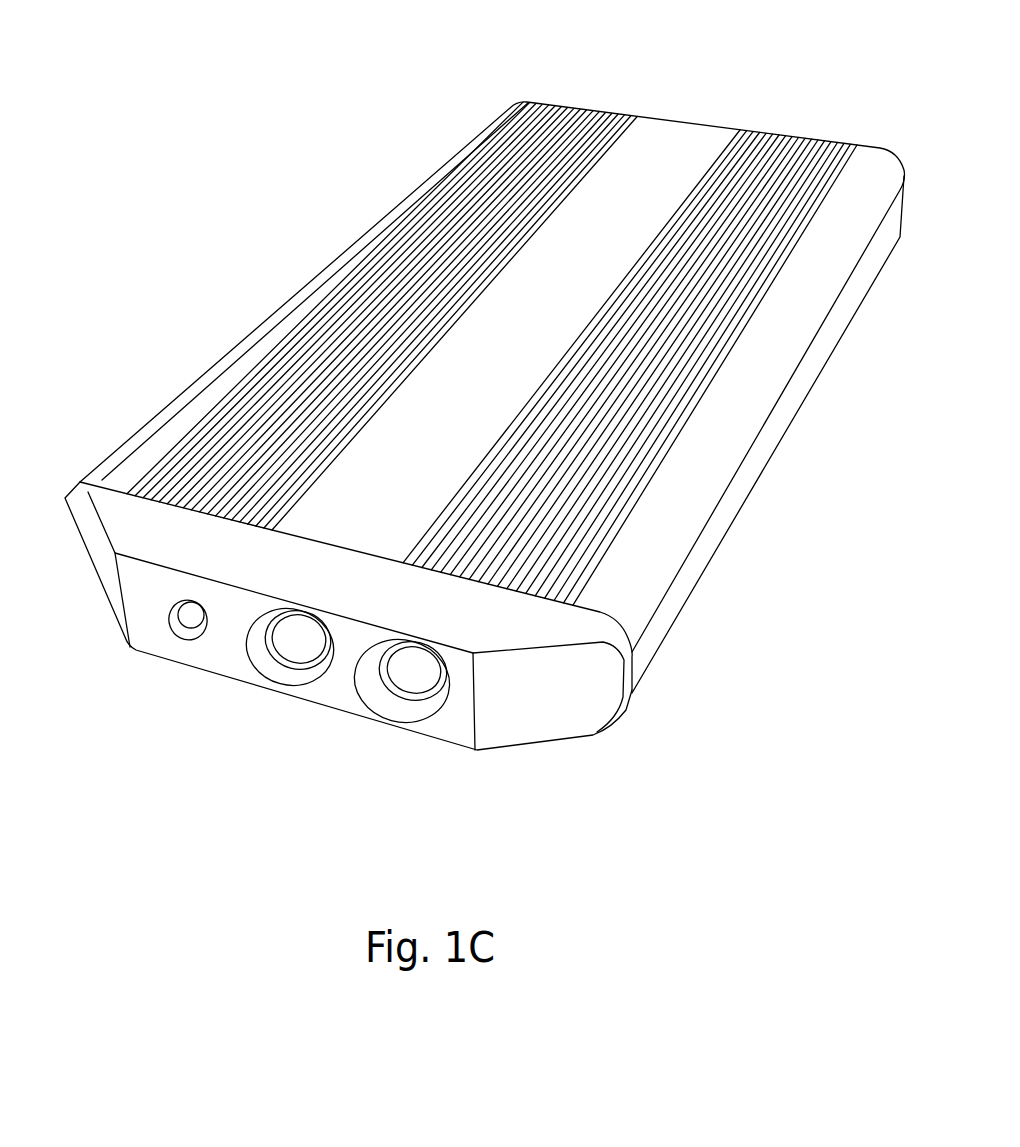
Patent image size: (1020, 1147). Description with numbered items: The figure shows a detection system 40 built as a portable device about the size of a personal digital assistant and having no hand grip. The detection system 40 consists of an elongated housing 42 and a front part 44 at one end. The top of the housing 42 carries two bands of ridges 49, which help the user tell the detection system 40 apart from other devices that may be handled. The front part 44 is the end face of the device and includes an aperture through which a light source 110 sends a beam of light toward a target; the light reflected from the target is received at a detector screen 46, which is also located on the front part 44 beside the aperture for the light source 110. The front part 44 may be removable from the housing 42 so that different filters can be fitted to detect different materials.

The detection system 40 is at (395, 100).
The housing 42 is at (330, 268).
The front part 44 is at (570, 738).
The detector screen 46 is at (303, 680).
The ridges 49 is at (641, 111).
The light source 110 is at (412, 697).